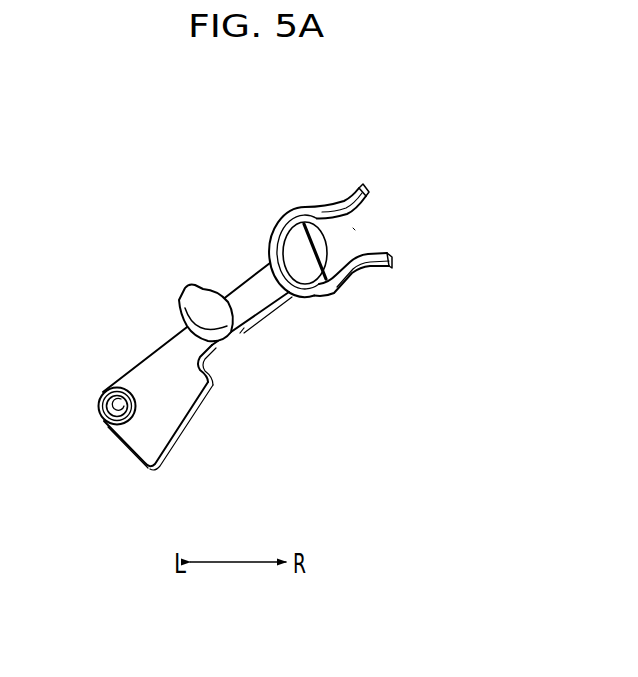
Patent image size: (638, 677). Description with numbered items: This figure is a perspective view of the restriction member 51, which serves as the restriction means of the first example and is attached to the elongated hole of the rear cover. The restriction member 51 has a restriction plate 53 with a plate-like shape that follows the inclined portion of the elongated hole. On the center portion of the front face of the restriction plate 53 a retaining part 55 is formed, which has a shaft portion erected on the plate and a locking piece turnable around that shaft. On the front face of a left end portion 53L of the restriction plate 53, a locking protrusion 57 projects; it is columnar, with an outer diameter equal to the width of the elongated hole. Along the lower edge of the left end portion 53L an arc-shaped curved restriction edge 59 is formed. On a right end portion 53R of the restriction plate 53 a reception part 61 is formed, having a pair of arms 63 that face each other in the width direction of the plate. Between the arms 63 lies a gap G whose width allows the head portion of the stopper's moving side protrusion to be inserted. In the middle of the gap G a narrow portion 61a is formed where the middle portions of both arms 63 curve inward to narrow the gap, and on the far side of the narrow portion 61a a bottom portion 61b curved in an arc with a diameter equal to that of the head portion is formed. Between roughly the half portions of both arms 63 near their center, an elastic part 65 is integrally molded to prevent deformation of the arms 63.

The restriction member 51 is at (180, 243).
The restriction plate 53 is at (163, 340).
The left end portion 53L is at (152, 392).
The right end portion 53R is at (245, 287).
The retaining part 55 is at (211, 319).
The locking protrusion 57 is at (98, 403).
The restriction edge 59 is at (180, 423).
The reception part 61 is at (326, 205).
The narrow portion 61a is at (355, 258).
The bottom portion 61b is at (295, 233).
The arms 63 is at (370, 192).
The elastic part 65 is at (304, 262).
The gap G is at (353, 228).